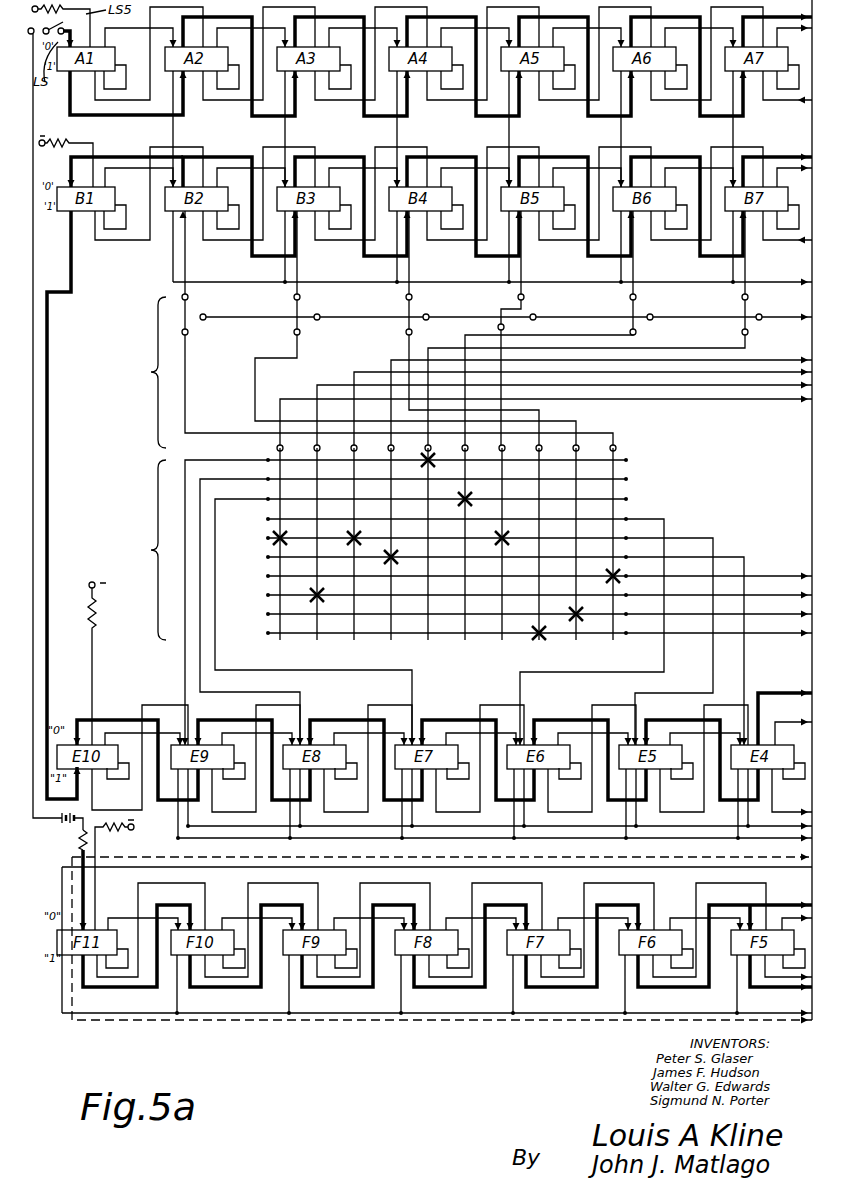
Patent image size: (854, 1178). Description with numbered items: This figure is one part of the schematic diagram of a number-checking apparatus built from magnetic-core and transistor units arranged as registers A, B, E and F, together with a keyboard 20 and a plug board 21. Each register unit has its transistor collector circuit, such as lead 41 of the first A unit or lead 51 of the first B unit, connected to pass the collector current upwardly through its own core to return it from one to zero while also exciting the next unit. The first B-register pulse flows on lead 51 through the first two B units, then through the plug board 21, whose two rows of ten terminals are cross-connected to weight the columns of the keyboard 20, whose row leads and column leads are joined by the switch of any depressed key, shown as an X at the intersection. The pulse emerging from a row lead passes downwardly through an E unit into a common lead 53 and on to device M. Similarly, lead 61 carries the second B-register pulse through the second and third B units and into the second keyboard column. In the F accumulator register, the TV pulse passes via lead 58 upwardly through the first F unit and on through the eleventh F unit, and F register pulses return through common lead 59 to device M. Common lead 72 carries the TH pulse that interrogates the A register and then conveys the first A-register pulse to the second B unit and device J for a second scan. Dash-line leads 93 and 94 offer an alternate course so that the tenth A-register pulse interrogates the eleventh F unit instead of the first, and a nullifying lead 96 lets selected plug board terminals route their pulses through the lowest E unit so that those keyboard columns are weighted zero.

The lead 41 is at (128, 58).
The lead 51 is at (133, 215).
The lead 61 is at (222, 174).
The common lead 72 is at (211, 292).
The nullifying lead 96 is at (208, 320).
The plug board 21 is at (470, 373).
The keyboard 20 is at (470, 596).
The common lead 53 is at (788, 834).
The lead 58 is at (724, 866).
The common lead 59 is at (104, 1012).
The lead 94 is at (72, 858).
The lead 93 is at (62, 1016).